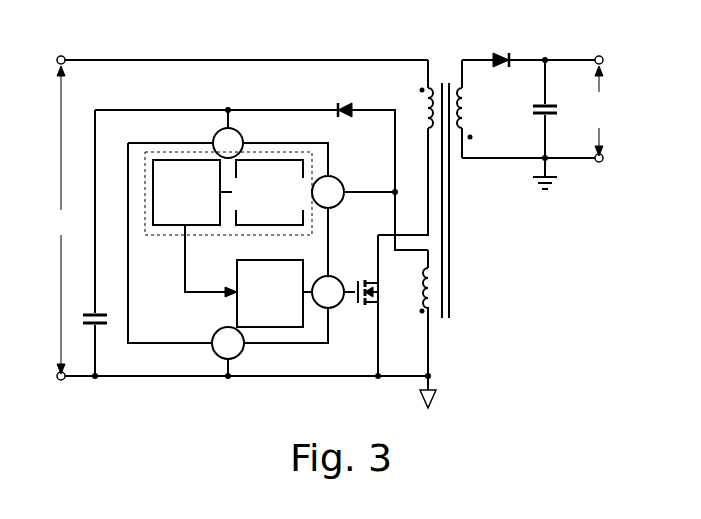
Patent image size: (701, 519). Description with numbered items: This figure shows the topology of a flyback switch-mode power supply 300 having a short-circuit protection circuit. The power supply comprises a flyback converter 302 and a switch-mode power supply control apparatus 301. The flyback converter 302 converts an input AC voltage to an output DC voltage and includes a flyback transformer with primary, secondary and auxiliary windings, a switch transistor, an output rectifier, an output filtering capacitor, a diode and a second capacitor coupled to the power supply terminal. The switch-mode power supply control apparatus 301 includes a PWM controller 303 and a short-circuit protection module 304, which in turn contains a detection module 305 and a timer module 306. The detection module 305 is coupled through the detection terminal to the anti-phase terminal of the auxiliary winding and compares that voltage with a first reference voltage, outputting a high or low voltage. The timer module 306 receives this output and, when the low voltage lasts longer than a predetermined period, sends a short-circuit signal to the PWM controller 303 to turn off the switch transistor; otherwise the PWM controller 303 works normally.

The power converter circuit 300 is at (312, 36).
The switch-mode power supply control apparatus 301 is at (128, 143).
The flyback converter 302 is at (445, 70).
The PWM controller 303 is at (272, 260).
The short-circuit protection module 304 is at (147, 152).
The detection module 305 is at (232, 225).
The timer module 306 is at (149, 235).